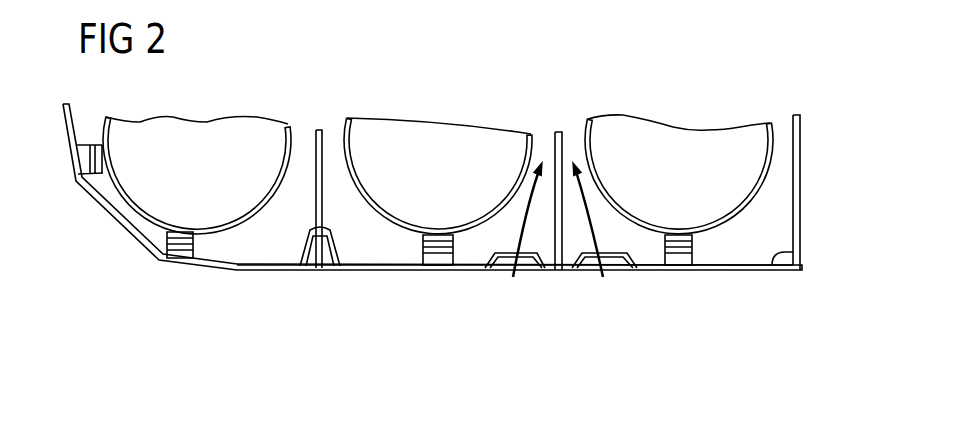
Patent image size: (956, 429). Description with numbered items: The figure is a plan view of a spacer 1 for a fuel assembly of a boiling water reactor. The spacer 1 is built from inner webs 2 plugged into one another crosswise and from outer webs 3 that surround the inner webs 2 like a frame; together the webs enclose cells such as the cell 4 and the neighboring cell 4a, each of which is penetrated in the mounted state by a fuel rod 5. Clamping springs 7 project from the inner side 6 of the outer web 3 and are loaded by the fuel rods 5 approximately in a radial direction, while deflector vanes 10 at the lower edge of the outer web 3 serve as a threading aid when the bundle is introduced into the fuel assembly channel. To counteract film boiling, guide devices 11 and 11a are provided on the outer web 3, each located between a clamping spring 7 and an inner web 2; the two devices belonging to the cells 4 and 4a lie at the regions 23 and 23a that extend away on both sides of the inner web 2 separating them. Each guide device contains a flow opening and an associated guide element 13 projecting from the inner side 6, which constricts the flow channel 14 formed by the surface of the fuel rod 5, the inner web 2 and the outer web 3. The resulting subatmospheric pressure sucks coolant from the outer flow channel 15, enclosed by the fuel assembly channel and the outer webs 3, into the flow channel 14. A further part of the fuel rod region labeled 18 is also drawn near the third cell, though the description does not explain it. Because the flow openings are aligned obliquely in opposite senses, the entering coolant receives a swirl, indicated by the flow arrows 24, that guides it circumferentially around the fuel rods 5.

The spacer 1 is at (709, 58).
The inner web 2 is at (315, 152).
The outer web 3 is at (757, 275).
The cell 4 is at (285, 233).
The cell 4a is at (765, 218).
The fuel rod 5 is at (287, 167).
The inner side 6 is at (790, 251).
The clamping spring 7 is at (177, 252).
The deflector vane 10 is at (330, 248).
The guide device 11 is at (490, 298).
The guide device 11a is at (641, 288).
The guide element 13 is at (597, 211).
The flow channel 14 is at (608, 238).
The flow channel 15 is at (622, 295).
The rim 18 is at (622, 213).
The region 23 is at (483, 280).
The region 23a is at (557, 280).
The flow arrow 24 is at (553, 207).